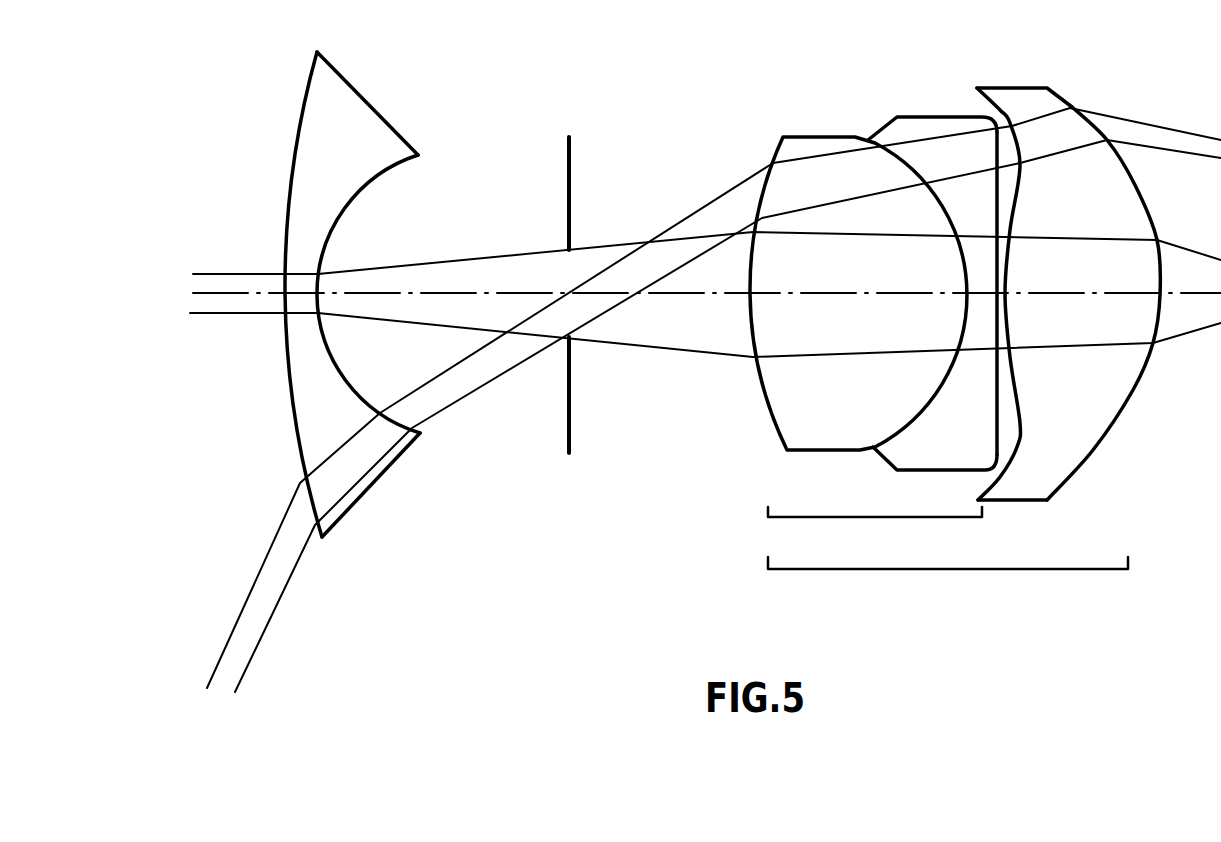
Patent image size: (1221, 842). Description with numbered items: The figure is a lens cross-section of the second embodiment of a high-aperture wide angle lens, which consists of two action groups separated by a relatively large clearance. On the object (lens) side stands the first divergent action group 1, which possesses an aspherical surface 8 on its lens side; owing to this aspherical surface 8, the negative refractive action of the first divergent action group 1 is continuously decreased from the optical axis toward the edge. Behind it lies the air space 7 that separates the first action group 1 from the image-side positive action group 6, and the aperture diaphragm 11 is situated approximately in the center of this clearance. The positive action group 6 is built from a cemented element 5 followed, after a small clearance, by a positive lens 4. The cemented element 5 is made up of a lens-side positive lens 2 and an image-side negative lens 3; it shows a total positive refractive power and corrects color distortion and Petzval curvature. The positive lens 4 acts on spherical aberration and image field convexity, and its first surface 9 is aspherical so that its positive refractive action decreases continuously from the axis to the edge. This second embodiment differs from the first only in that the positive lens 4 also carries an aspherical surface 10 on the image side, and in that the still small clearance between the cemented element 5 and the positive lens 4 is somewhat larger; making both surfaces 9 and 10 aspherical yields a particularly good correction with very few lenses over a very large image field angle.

The first divergent action group 1 is at (348, 80).
The aspherical surface 8 is at (290, 120).
The air space 7 is at (485, 223).
The aperture diaphragm 11 is at (570, 160).
The positive lens 2 is at (798, 137).
The negative lens 3 is at (922, 115).
The aspherical surface 9 is at (997, 167).
The positive lens 4 is at (1022, 87).
The aspherical surface 10 is at (1063, 102).
The cemented element 5 is at (873, 519).
The positive action group 6 is at (907, 573).